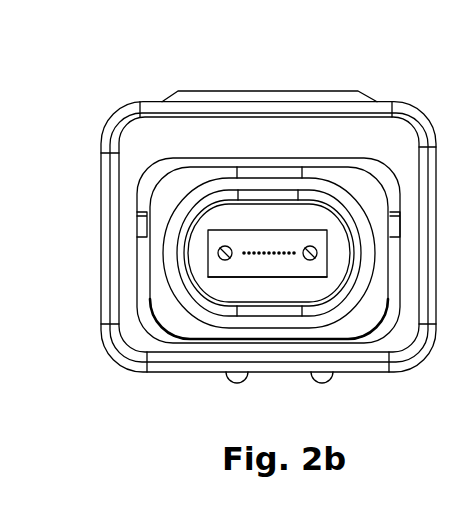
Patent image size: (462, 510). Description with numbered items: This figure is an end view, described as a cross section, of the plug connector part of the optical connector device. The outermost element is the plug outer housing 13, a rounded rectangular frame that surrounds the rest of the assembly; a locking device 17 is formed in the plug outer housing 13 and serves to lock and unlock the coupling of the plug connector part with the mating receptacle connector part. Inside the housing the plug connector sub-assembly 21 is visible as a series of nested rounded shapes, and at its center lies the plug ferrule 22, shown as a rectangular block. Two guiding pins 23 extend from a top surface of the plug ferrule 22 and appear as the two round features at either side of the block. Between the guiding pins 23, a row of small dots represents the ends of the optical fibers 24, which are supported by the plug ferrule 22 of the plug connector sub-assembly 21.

The plug outer housing 13 is at (121, 108).
The locking device 17 is at (222, 92).
The plug connector sub-assembly 21 is at (267, 230).
The plug ferrule 22 is at (262, 278).
The guiding pins 23 is at (225, 261).
The optical fibers 24 is at (288, 252).